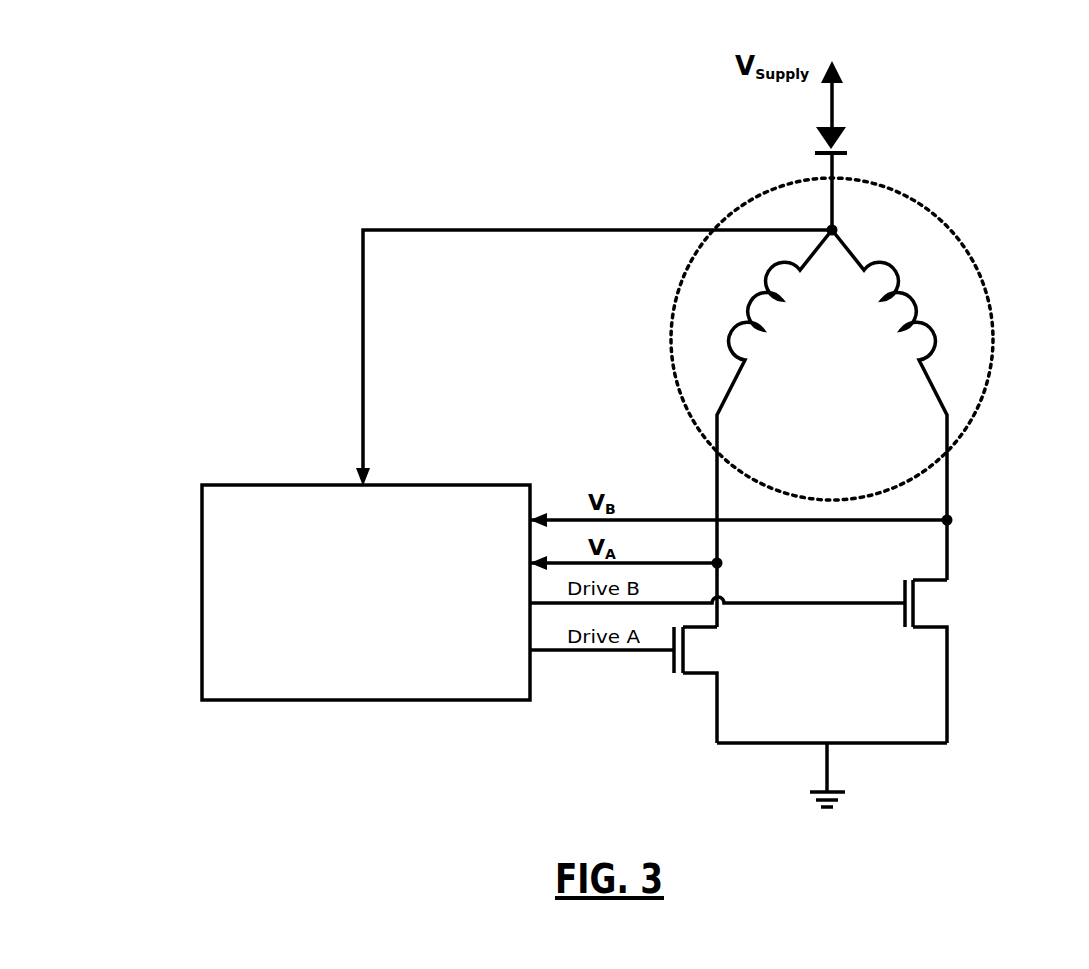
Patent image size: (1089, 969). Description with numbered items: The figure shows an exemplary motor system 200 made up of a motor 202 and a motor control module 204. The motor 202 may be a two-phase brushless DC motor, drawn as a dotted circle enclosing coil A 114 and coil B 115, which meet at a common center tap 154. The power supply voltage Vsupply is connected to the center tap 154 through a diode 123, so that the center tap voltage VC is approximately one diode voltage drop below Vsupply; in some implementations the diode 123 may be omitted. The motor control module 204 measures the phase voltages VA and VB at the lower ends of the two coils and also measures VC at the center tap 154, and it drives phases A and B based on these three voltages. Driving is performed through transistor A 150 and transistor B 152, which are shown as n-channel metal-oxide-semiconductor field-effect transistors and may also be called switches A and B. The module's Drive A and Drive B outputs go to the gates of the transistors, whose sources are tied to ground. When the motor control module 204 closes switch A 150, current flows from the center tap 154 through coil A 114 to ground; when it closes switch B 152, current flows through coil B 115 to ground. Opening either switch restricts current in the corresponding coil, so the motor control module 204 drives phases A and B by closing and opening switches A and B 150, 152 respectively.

The motor system 200 is at (333, 142).
The motor 202 is at (961, 236).
The motor control module 204 is at (271, 484).
The coil A 114 is at (735, 350).
The coil B 115 is at (918, 335).
The diode 123 is at (821, 139).
The transistor A 150 is at (673, 671).
The transistor B 152 is at (906, 612).
The center tap 154 is at (838, 226).